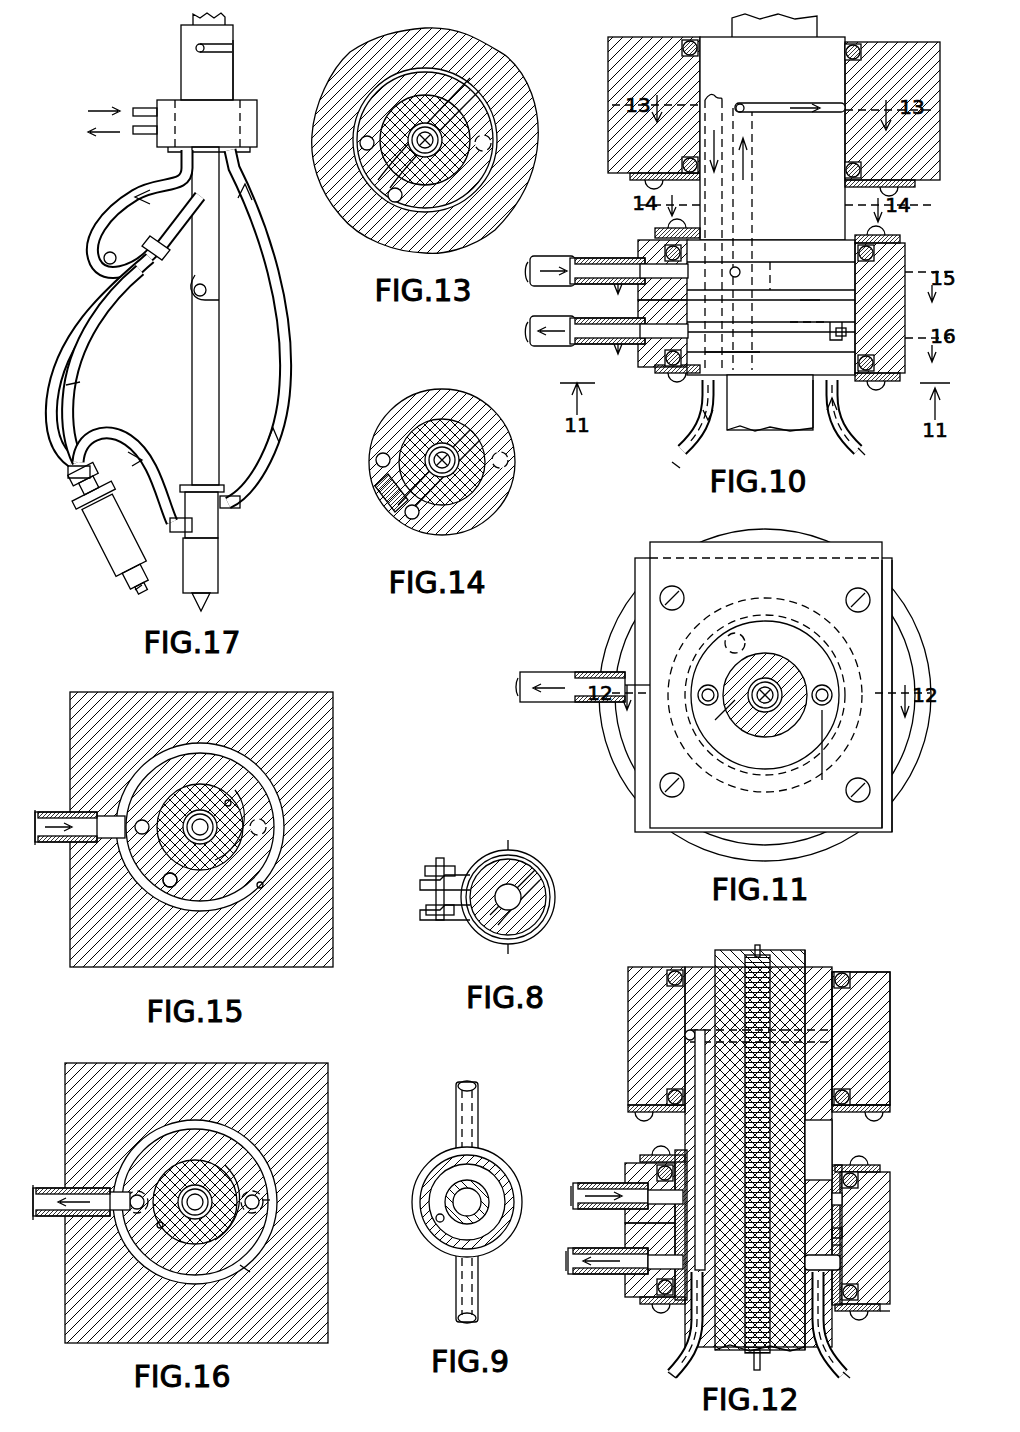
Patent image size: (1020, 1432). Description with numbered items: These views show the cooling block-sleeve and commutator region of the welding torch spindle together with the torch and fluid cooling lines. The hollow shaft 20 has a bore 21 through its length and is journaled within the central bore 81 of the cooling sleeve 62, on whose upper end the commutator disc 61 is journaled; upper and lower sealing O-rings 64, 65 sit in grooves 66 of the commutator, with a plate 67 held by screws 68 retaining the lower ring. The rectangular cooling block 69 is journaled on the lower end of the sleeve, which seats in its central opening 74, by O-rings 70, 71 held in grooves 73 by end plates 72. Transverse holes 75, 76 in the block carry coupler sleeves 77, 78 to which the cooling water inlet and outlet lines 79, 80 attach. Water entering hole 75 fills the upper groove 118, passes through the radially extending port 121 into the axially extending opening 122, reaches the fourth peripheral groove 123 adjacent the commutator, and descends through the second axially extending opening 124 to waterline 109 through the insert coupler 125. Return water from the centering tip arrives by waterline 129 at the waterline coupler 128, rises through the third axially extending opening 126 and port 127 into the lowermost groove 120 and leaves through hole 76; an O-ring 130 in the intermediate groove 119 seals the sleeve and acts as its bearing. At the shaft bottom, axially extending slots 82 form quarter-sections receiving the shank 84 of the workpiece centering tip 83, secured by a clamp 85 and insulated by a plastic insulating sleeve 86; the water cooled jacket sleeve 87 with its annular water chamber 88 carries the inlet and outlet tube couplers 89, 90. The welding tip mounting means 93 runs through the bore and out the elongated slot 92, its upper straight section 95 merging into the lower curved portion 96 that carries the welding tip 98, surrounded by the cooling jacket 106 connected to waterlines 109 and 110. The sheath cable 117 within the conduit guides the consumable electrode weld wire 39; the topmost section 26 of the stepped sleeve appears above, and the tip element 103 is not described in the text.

In FIG. 17, the hollow shaft 20 is at (212, 22).
In FIG. 13, the hollow shaft 20 is at (432, 95).
In FIG. 14, the hollow shaft 20 is at (462, 493).
In FIG. 10, the hollow shaft 20 is at (795, 422).
In FIG. 11, the hollow shaft 20 is at (757, 738).
In FIG. 15, the hollow shaft 20 is at (200, 827).
In FIG. 16, the hollow shaft 20 is at (196, 1202).
In FIG. 8, the hollow shaft 20 is at (545, 885).
In FIG. 12, the hollow shaft 20 is at (725, 965).
In FIG. 14, the bore 21 is at (465, 450).
In FIG. 8, the bore 21 is at (538, 932).
In FIG. 10, the topmost section 26 is at (795, 318).
In FIG. 14, the consumable electrode weld wire 39 is at (446, 450).
In FIG. 11, the consumable electrode weld wire 39 is at (772, 685).
In FIG. 15, the consumable electrode weld wire 39 is at (207, 820).
In FIG. 12, the consumable electrode weld wire 39 is at (762, 950).
In FIG. 13, the commutator disc 61 is at (455, 50).
In FIG. 10, the commutator disc 61 is at (635, 73).
In FIG. 11, the commutator disc 61 is at (625, 622).
In FIG. 12, the commutator disc 61 is at (880, 1018).
In FIG. 17, the cooling sleeve 62 is at (254, 68).
In FIG. 13, the cooling sleeve 62 is at (489, 92).
In FIG. 14, the cooling sleeve 62 is at (489, 543).
In FIG. 10, the cooling sleeve 62 is at (797, 180).
In FIG. 11, the cooling sleeve 62 is at (712, 652).
In FIG. 15, the cooling sleeve 62 is at (274, 776).
In FIG. 16, the cooling sleeve 62 is at (268, 1153).
In FIG. 12, the cooling sleeve 62 is at (842, 962).
In FIG. 10, the upper sealing O-ring 64 is at (862, 45).
In FIG. 12, the upper sealing O-ring 64 is at (848, 975).
In FIG. 10, the lower sealing O-ring 65 is at (680, 165).
In FIG. 12, the lower sealing O-ring 65 is at (855, 1097).
In FIG. 10, the grooves 66 is at (705, 50).
In FIG. 12, the grooves 66 is at (672, 972).
In FIG. 10, the plate 67 is at (642, 184).
In FIG. 12, the plate 67 is at (640, 1105).
In FIG. 10, the screws 68 is at (890, 190).
In FIG. 12, the screws 68 is at (892, 1112).
In FIG. 17, the cooling block 69 is at (165, 108).
In FIG. 10, the cooling block 69 is at (905, 252).
In FIG. 11, the cooling block 69 is at (885, 700).
In FIG. 15, the cooling block 69 is at (285, 693).
In FIG. 16, the cooling block 69 is at (298, 1085).
In FIG. 12, the cooling block 69 is at (870, 1190).
In FIG. 10, the upper sealing O-ring 70 is at (840, 256).
In FIG. 12, the upper sealing O-ring 70 is at (860, 1170).
In FIG. 10, the lower sealing O-ring 71 is at (720, 358).
In FIG. 11, the lower sealing O-ring 71 is at (845, 755).
In FIG. 12, the lower sealing O-ring 71 is at (855, 1303).
In FIG. 10, the end plates 72 is at (890, 232).
In FIG. 11, the end plates 72 is at (862, 580).
In FIG. 12, the end plates 72 is at (672, 1300).
In FIG. 10, the grooves 73 is at (662, 236).
In FIG. 10, the central opening 74 is at (845, 290).
In FIG. 10, the hole 75 is at (660, 272).
In FIG. 15, the hole 75 is at (100, 814).
In FIG. 12, the hole 75 is at (645, 1165).
In FIG. 10, the hole 76 is at (655, 345).
In FIG. 16, the hole 76 is at (110, 1240).
In FIG. 12, the hole 76 is at (640, 1290).
In FIG. 10, the coupler sleeve 77 is at (605, 256).
In FIG. 15, the coupler sleeve 77 is at (52, 812).
In FIG. 12, the coupler sleeve 77 is at (622, 1185).
In FIG. 10, the coupler sleeve 78 is at (635, 345).
In FIG. 11, the coupler sleeve 78 is at (585, 678).
In FIG. 16, the coupler sleeve 78 is at (55, 1188).
In FIG. 12, the coupler sleeve 78 is at (622, 1268).
In FIG. 17, the cooling water inlet line 79 is at (145, 108).
In FIG. 10, the cooling water inlet line 79 is at (545, 282).
In FIG. 15, the cooling water inlet line 79 is at (50, 845).
In FIG. 12, the cooling water inlet line 79 is at (580, 1208).
In FIG. 17, the cooling water outlet line 80 is at (145, 136).
In FIG. 10, the cooling water outlet line 80 is at (552, 342).
In FIG. 11, the cooling water outlet line 80 is at (538, 705).
In FIG. 16, the cooling water outlet line 80 is at (45, 1220).
In FIG. 12, the cooling water outlet line 80 is at (578, 1275).
In FIG. 15, the central bore 81 is at (232, 805).
In FIG. 16, the central bore 81 is at (158, 1230).
In FIG. 12, the central bore 81 is at (812, 968).
In FIG. 8, the axially extending slots 82 is at (552, 905).
In FIG. 17, the workpiece centering tip 83 is at (210, 572).
In FIG. 9, the workpiece centering tip 83 is at (498, 1250).
In FIG. 8, the shank 84 is at (505, 880).
In FIG. 9, the shank 84 is at (480, 1195).
In FIG. 8, the clamp 85 is at (452, 930).
In FIG. 8, the plastic insulating sleeve 86 is at (535, 865).
In FIG. 17, the water cooled jacket sleeve 87 is at (227, 532).
In FIG. 9, the water cooled jacket sleeve 87 is at (490, 1165).
In FIG. 9, the annular water chamber 88 is at (438, 1223).
In FIG. 17, the inlet tube coupler 89 is at (182, 535).
In FIG. 9, the inlet tube coupler 89 is at (462, 1295).
In FIG. 17, the outlet tube coupler 90 is at (235, 515).
In FIG. 9, the outlet tube coupler 90 is at (470, 1105).
In FIG. 17, the elongated slot 92 is at (205, 300).
In FIG. 17, the welding tip mounting means 93 is at (80, 306).
In FIG. 17, the upper straight section 95 is at (200, 193).
In FIG. 13, the upper straight section 95 is at (445, 133).
In FIG. 14, the upper straight section 95 is at (438, 452).
In FIG. 11, the upper straight section 95 is at (770, 712).
In FIG. 16, the upper straight section 95 is at (193, 1195).
In FIG. 12, the upper straight section 95 is at (750, 958).
In FIG. 17, the lower curved portion 96 is at (68, 388).
In FIG. 17, the welding tip 98 is at (95, 573).
In FIG. 17, the tip 103 is at (132, 590).
In FIG. 17, the cooling jacket 106 is at (72, 357).
In FIG. 17, the waterline 109 is at (104, 258).
In FIG. 10, the waterline 109 is at (700, 458).
In FIG. 12, the waterline 109 is at (680, 1366).
In FIG. 17, the waterline 110 is at (115, 447).
In FIG. 14, the sheath cable 117 is at (441, 450).
In FIG. 12, the sheath cable 117 is at (752, 1352).
In FIG. 10, the upper groove 118 is at (782, 264).
In FIG. 15, the upper groove 118 is at (262, 888).
In FIG. 12, the upper groove 118 is at (845, 1200).
In FIG. 12, the intermediate groove 119 is at (845, 1233).
In FIG. 10, the lowermost circular groove 120 is at (770, 403).
In FIG. 16, the lowermost circular groove 120 is at (245, 1272).
In FIG. 12, the lowermost circular groove 120 is at (842, 1264).
In FIG. 10, the radially extending port 121 is at (745, 262).
In FIG. 15, the radially extending port 121 is at (172, 890).
In FIG. 13, the axially extending opening 122 is at (388, 196).
In FIG. 14, the axially extending opening 122 is at (405, 518).
In FIG. 10, the axially extending opening 122 is at (745, 210).
In FIG. 11, the axially extending opening 122 is at (745, 640).
In FIG. 15, the axially extending opening 122 is at (165, 882).
In FIG. 13, the fourth peripheral groove 123 is at (472, 70).
In FIG. 10, the fourth peripheral groove 123 is at (775, 106).
In FIG. 12, the fourth peripheral groove 123 is at (686, 1035).
In FIG. 13, the second axially extending opening 124 is at (362, 138).
In FIG. 14, the second axially extending opening 124 is at (378, 456).
In FIG. 10, the second axially extending opening 124 is at (725, 98).
In FIG. 11, the second axially extending opening 124 is at (705, 705).
In FIG. 15, the second axially extending opening 124 is at (146, 820).
In FIG. 16, the second axially extending opening 124 is at (137, 1212).
In FIG. 12, the second axially extending opening 124 is at (695, 1120).
In FIG. 10, the insert coupler 125 is at (680, 445).
In FIG. 11, the insert coupler 125 is at (722, 720).
In FIG. 12, the insert coupler 125 is at (690, 1330).
In FIG. 13, the third axially extending opening 126 is at (492, 141).
In FIG. 14, the third axially extending opening 126 is at (508, 461).
In FIG. 11, the third axially extending opening 126 is at (826, 688).
In FIG. 15, the third axially extending opening 126 is at (266, 824).
In FIG. 16, the third axially extending opening 126 is at (258, 1218).
In FIG. 12, the third axially extending opening 126 is at (832, 1150).
In FIG. 10, the radially extending port 127 is at (828, 333).
In FIG. 16, the radially extending port 127 is at (268, 1204).
In FIG. 10, the waterline coupler 128 is at (850, 403).
In FIG. 11, the waterline coupler 128 is at (820, 785).
In FIG. 12, the waterline coupler 128 is at (830, 1328).
In FIG. 17, the waterline 129 is at (282, 374).
In FIG. 10, the waterline 129 is at (868, 445).
In FIG. 12, the waterline 129 is at (848, 1366).
In FIG. 10, the O-ring 130 is at (848, 332).
In FIG. 12, the O-ring 130 is at (845, 1248).